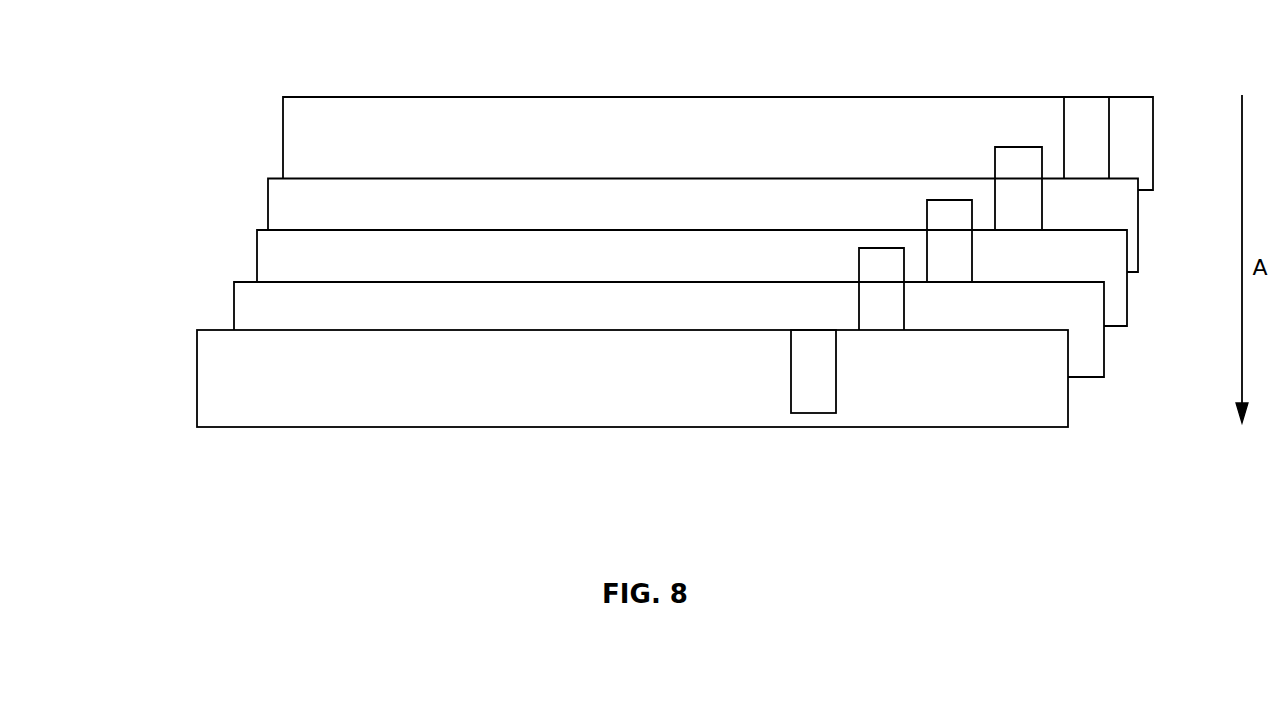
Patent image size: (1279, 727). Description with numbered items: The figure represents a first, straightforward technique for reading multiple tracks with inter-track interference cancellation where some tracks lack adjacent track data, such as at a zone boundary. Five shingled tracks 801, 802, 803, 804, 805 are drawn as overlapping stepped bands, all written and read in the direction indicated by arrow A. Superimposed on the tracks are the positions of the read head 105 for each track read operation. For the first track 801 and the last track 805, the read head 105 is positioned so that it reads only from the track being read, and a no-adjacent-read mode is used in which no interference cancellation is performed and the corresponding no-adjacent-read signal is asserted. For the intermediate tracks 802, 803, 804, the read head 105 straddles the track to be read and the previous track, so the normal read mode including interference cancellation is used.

The shingled track 801 is at (265, 130).
The shingled track 802 is at (248, 199).
The shingled track 803 is at (238, 250).
The shingled track 804 is at (217, 300).
The shingled track 805 is at (180, 374).
The read head 105 is at (883, 248).